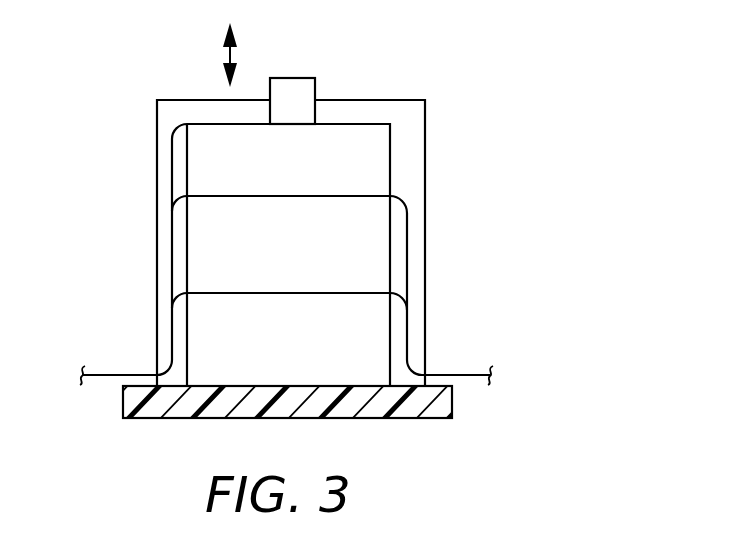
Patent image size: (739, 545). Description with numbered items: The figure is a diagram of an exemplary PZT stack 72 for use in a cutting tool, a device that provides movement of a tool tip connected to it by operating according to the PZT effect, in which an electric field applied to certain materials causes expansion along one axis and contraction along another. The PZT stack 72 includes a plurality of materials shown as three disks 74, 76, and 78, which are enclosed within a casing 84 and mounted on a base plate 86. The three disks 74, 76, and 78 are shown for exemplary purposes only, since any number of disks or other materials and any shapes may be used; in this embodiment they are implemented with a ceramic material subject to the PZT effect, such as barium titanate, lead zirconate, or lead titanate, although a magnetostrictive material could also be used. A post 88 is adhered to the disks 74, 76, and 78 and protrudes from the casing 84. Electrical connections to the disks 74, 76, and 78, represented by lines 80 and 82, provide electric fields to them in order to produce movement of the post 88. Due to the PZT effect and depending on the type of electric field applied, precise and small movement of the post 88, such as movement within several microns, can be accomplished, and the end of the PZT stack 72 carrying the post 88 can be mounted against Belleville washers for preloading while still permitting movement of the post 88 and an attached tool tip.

The PZT stack 72 is at (444, 53).
The disk 74 is at (373, 157).
The disk 76 is at (373, 236).
The disk 78 is at (373, 330).
The line 80 is at (475, 375).
The line 82 is at (112, 374).
The casing 84 is at (156, 191).
The base plate 86 is at (152, 407).
The post 88 is at (317, 88).